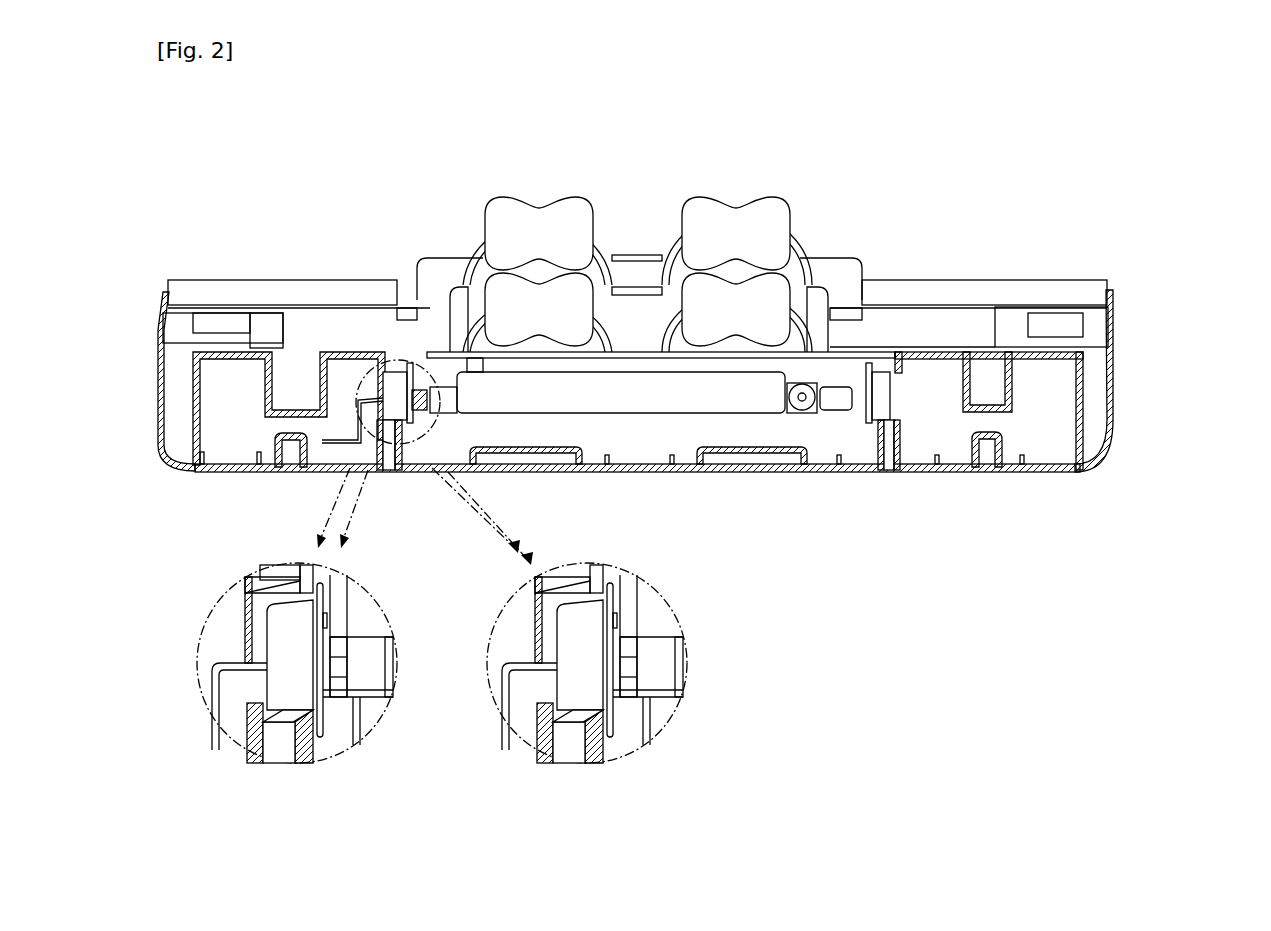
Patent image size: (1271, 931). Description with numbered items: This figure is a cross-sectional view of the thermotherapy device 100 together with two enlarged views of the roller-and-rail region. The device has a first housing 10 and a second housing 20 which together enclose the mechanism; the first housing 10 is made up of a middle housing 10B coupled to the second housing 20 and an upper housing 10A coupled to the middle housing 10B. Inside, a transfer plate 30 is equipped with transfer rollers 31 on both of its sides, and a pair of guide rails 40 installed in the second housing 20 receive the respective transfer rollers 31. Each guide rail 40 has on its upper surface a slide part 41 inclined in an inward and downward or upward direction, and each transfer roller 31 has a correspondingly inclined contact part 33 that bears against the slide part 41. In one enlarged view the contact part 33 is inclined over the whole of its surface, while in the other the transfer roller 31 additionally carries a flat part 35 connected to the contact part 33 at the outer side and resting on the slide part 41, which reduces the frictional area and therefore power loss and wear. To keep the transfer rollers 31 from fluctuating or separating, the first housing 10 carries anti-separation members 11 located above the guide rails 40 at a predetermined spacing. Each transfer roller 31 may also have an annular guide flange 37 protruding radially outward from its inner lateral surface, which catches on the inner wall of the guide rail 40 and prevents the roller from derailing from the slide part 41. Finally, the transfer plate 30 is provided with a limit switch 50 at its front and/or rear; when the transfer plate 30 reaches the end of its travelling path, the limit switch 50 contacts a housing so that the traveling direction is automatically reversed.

The wheel assembly 100 is at (770, 178).
The first housing 10 is at (1215, 347).
The upper housing 10A is at (1122, 343).
The middle housing 10B is at (1122, 420).
The anti-separation member 11 is at (888, 352).
The second housing 20 is at (770, 508).
The transfer plate 30 is at (900, 377).
The transfer roller 31 is at (267, 633).
The contact part 33 is at (262, 580).
The flat part 35 is at (278, 568).
The guide flange 37 is at (323, 583).
The guide rail 40 is at (900, 435).
The slide part 41 is at (310, 712).
The limit switch 50 is at (805, 402).